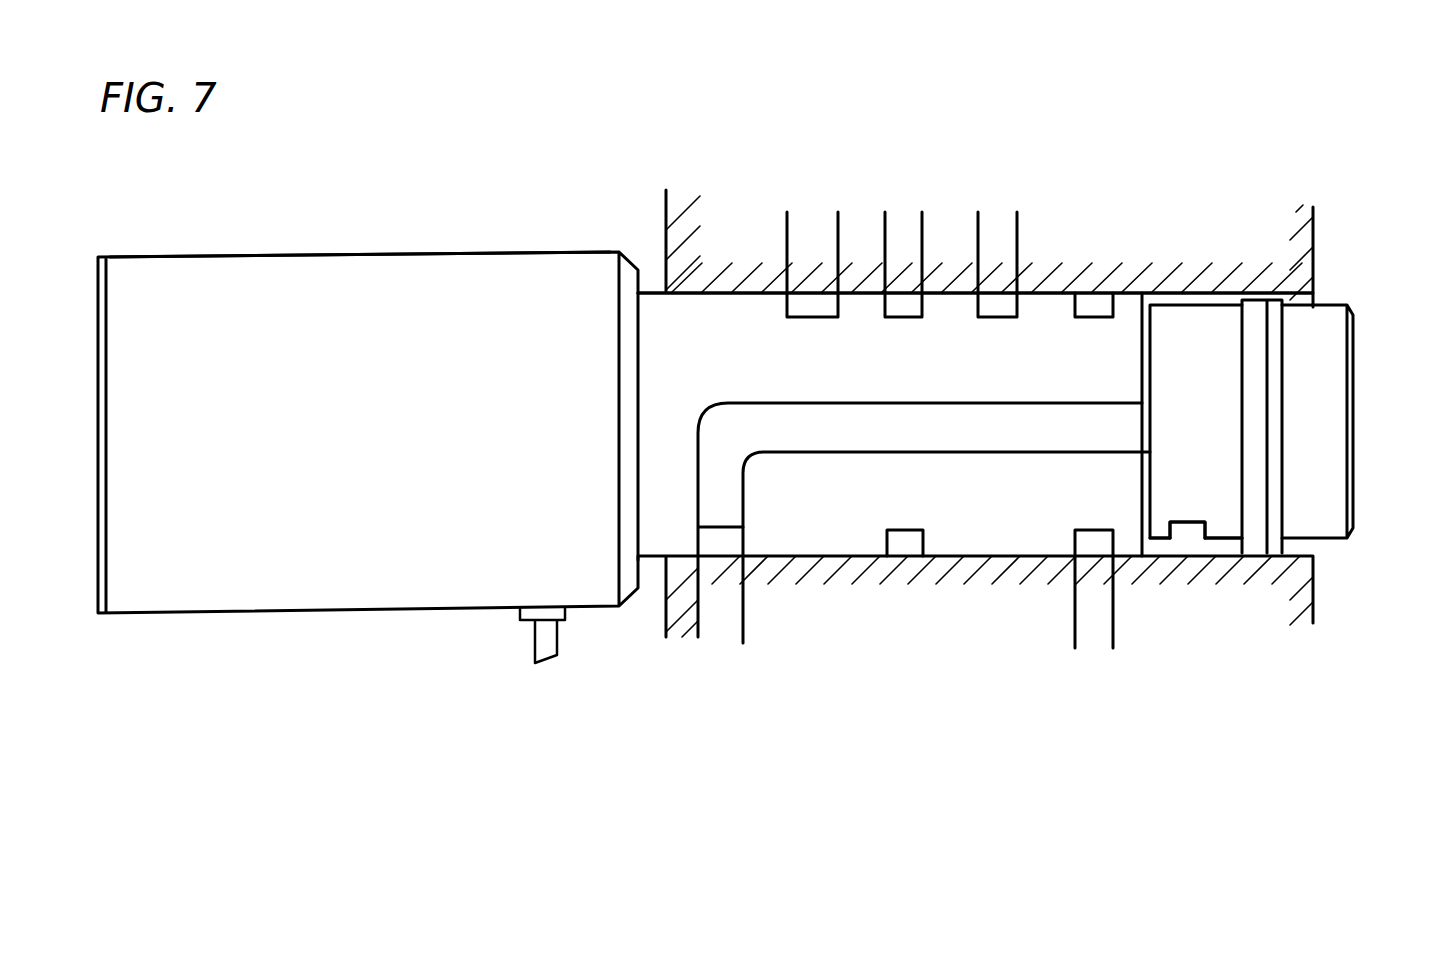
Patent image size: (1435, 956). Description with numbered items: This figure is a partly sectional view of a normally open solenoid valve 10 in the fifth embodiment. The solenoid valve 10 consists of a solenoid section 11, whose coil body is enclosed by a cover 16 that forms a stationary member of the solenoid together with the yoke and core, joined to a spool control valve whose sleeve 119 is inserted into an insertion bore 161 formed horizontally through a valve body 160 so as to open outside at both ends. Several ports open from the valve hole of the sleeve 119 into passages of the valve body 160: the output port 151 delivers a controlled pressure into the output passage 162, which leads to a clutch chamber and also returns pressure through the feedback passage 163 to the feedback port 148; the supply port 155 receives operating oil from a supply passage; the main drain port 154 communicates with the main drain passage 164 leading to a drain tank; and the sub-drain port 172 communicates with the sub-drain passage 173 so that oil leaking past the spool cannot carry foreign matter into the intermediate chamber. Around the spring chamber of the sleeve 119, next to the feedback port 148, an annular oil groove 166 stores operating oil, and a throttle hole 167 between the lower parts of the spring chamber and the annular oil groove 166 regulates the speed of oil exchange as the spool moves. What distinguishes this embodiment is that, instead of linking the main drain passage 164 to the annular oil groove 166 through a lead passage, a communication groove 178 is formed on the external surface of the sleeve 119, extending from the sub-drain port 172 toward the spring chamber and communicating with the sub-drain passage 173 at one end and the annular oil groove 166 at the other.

The solenoid valve 10 is at (592, 234).
The solenoid section 11 is at (474, 239).
The cover 16 is at (365, 280).
The sleeve 119 is at (1335, 350).
The feedback port 148 is at (828, 304).
The output port 151 is at (1003, 305).
The main drain port 154 is at (1092, 538).
The supply port 155 is at (920, 305).
The valve body 160 is at (1313, 220).
The insertion bore 161 is at (1313, 548).
The output passage 162 is at (1003, 232).
The feedback passage 163 is at (798, 247).
The main drain passage 164 is at (1113, 620).
The annular oil groove 166 is at (1225, 505).
The throttle hole 167 is at (1182, 534).
The sub-drain port 172 is at (737, 545).
The sub-drain passage 173 is at (730, 600).
The communication groove 178 is at (985, 440).